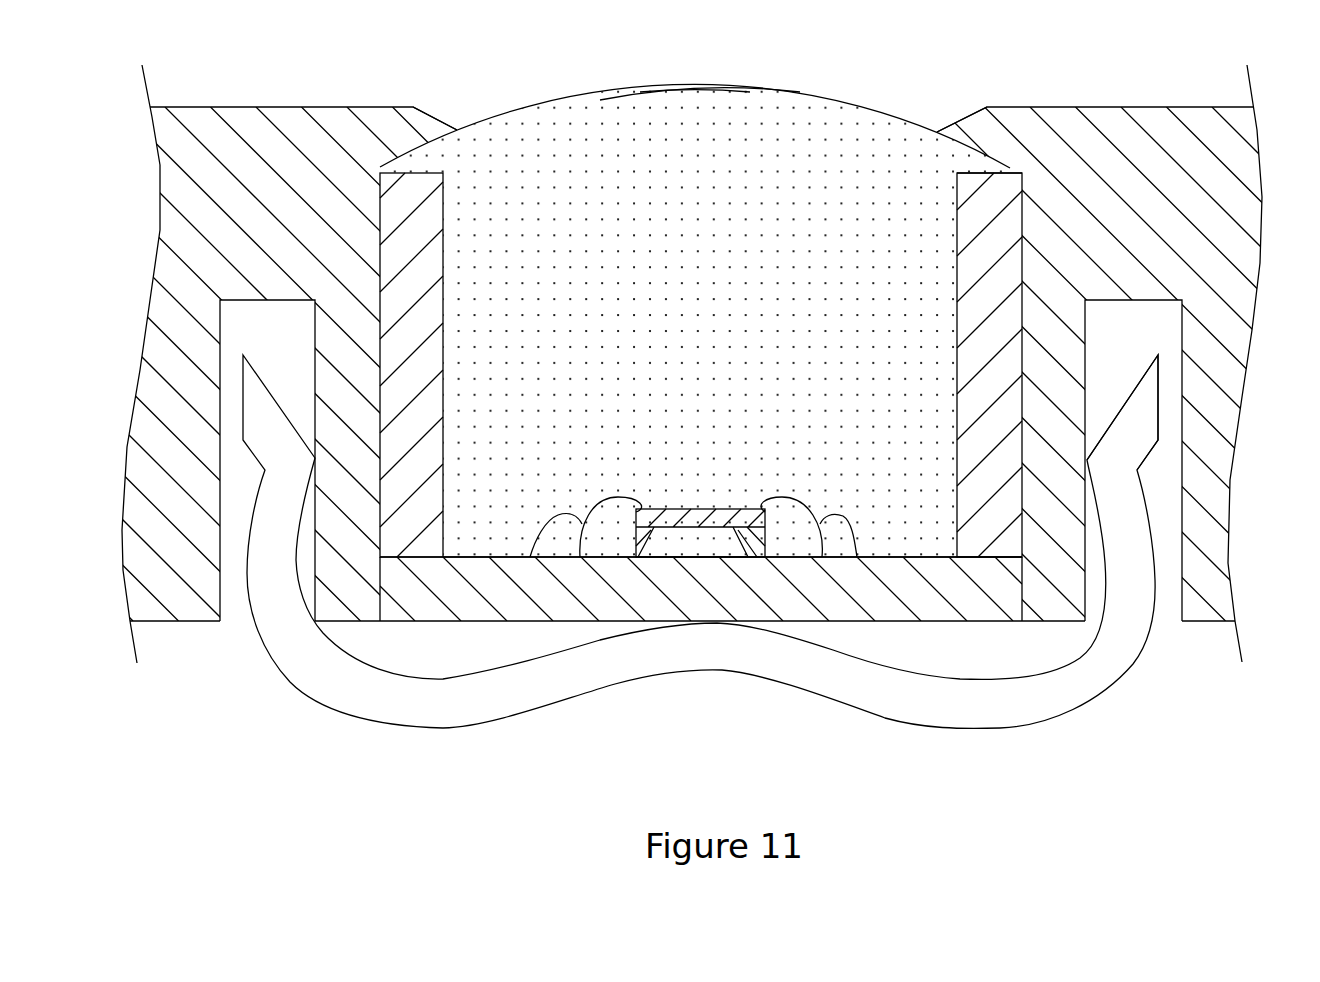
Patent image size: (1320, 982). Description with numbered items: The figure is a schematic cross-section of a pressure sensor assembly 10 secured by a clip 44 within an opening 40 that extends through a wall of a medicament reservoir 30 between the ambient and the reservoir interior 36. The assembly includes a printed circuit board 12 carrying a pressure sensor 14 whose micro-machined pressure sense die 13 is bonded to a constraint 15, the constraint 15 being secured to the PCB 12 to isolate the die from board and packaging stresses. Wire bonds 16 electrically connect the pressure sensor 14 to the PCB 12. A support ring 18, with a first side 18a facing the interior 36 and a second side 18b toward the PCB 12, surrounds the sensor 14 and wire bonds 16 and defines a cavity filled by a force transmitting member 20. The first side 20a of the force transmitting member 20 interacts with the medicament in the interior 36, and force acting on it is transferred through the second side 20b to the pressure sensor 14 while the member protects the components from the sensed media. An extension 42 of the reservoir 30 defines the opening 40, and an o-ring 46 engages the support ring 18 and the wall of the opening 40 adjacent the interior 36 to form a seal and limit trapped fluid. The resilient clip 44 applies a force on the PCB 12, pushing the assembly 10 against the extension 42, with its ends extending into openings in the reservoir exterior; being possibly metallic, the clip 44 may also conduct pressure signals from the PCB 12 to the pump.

The pressure sensor assembly 10 is at (719, 415).
The printed circuit board 12 is at (825, 607).
The pressure sense die 13 is at (717, 520).
The pressure sensor 14 is at (756, 572).
The constraint 15 is at (647, 540).
The wire bonds 16 is at (548, 534).
The support ring 18 is at (1012, 217).
The first side of support ring 18a is at (1009, 216).
The second side of support ring 18b is at (1012, 572).
The force transmitting member 20 is at (860, 153).
The first side of force transmitting member 20a is at (814, 82).
The second side of force transmitting member 20b is at (690, 525).
The reservoir 30 is at (1217, 329).
The interior 36 is at (683, 62).
The opening 40 is at (442, 88).
The extension 42 is at (1003, 160).
The clip 44 is at (372, 712).
The o-ring 46 is at (1173, 635).